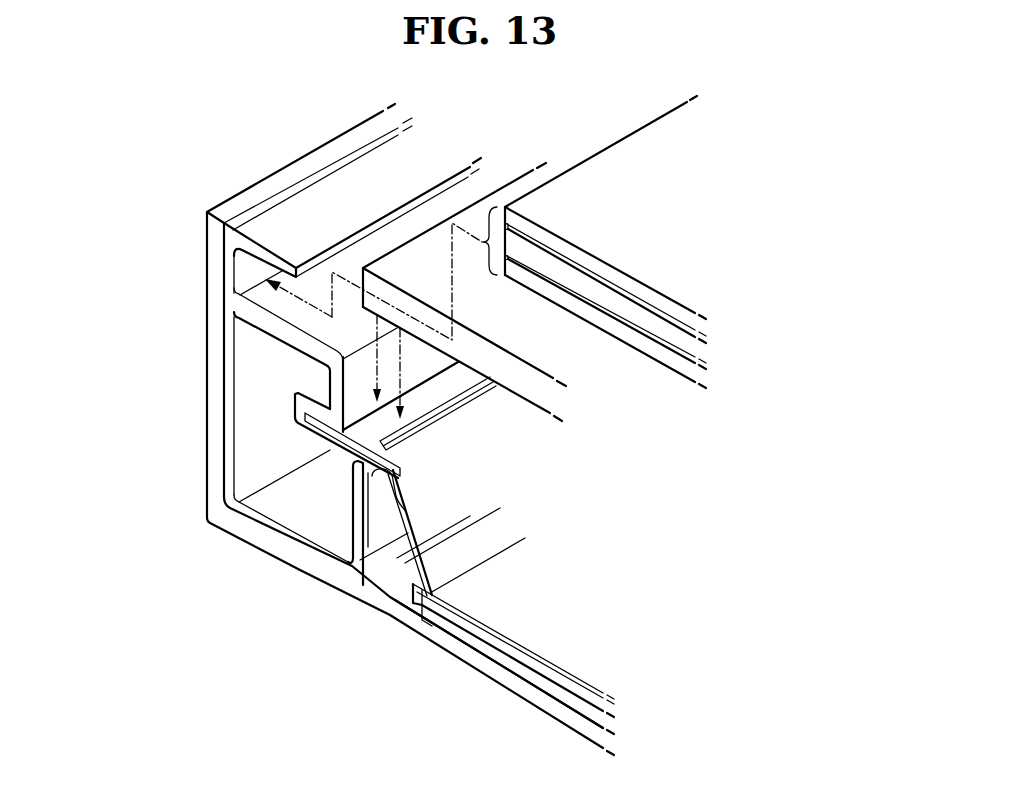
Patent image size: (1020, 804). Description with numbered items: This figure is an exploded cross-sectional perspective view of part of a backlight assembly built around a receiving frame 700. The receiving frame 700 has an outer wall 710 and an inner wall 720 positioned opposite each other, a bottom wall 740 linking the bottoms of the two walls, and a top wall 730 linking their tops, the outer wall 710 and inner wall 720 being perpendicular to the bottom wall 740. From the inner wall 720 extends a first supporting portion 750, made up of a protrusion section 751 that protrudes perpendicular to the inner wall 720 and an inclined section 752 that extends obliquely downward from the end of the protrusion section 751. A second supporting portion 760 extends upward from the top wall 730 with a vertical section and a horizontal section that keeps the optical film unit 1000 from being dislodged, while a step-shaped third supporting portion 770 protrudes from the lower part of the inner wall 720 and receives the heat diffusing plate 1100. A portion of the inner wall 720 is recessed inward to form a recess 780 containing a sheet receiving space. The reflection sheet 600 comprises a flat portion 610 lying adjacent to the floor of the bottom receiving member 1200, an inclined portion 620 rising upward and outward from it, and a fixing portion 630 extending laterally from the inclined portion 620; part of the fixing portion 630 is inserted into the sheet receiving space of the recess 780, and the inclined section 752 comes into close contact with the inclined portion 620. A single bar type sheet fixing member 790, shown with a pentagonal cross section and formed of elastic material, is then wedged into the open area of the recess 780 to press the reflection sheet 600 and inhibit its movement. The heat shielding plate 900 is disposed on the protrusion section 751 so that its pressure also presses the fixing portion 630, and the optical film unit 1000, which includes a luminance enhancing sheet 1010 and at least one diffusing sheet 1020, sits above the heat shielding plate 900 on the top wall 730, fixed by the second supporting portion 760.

The receiving frame 700 is at (368, 757).
The outer wall 710 is at (227, 461).
The inner wall 720 is at (358, 525).
The top wall 730 is at (273, 323).
The bottom wall 740 is at (278, 530).
The first supporting portion 750 is at (345, 676).
The protrusion section 751 is at (368, 552).
The inclined section 752 is at (400, 584).
The second supporting portion 760 is at (232, 263).
The third supporting portion 770 is at (412, 622).
The recess 780 is at (289, 403).
The sheet fixing member 790 is at (350, 475).
The heat shielding plate 900 is at (548, 398).
The optical film unit 1000 is at (803, 338).
The luminance enhancing sheet 1010 is at (700, 334).
The diffusing sheet 1020 is at (700, 362).
The reflection sheet 600 is at (619, 533).
The flat portion 610 is at (490, 618).
The inclined portion 620 is at (438, 550).
The fixing portion 630 is at (445, 547).
The heat diffusing plate 1100 is at (577, 675).
The bottom receiving member 1200 is at (482, 668).